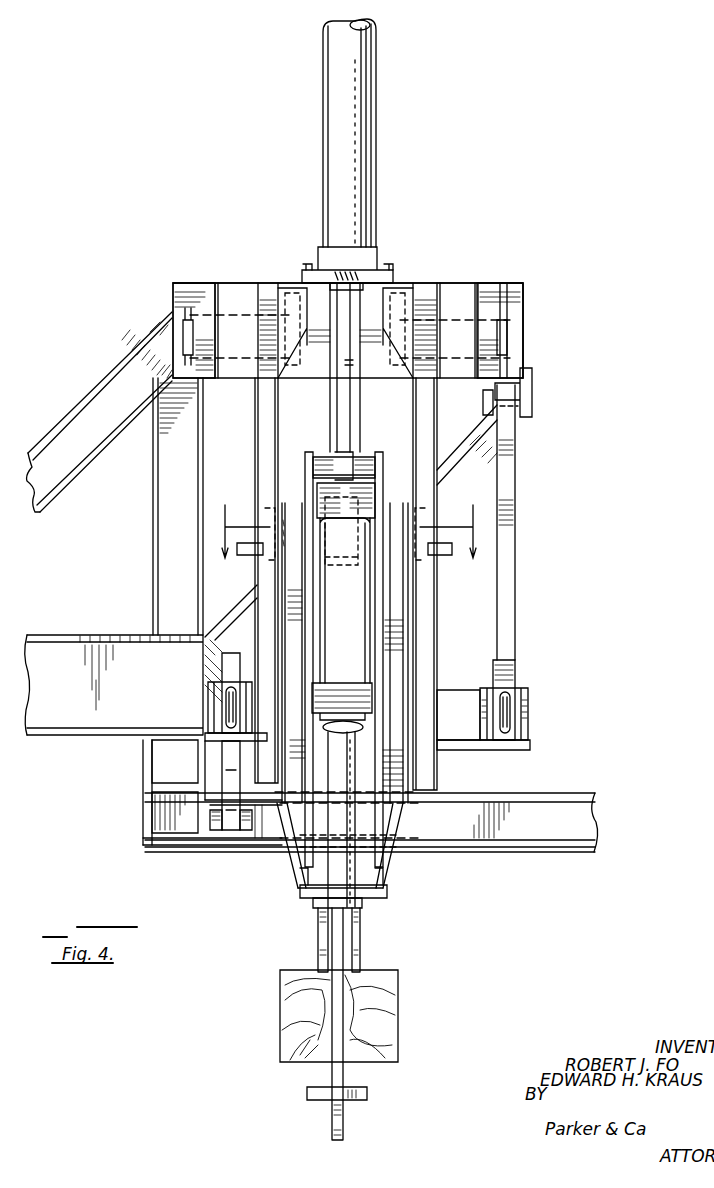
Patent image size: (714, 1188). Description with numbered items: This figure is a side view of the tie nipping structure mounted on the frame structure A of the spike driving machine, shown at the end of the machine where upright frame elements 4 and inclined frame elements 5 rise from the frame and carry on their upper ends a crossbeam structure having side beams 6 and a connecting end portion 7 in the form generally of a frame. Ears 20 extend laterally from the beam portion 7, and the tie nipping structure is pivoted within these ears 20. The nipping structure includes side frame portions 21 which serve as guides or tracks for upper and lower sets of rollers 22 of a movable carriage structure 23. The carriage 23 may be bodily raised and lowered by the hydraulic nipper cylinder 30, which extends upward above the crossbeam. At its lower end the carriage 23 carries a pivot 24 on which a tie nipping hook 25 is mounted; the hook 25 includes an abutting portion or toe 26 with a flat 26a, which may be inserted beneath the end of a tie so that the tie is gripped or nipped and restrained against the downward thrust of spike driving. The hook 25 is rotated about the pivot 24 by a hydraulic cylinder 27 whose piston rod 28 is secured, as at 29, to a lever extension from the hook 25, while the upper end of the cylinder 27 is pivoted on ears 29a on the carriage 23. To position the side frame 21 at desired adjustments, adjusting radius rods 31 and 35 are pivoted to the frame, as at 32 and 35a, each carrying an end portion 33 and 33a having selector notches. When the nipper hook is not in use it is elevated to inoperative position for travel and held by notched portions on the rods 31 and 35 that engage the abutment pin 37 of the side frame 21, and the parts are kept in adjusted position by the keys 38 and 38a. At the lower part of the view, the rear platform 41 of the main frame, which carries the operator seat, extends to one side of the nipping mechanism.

The hydraulic nipper cylinder 30 is at (372, 190).
The ears 20 is at (198, 298).
The side beams 6 is at (525, 340).
The pivot 35a is at (533, 405).
The connecting end portion 7 is at (322, 372).
The side frame portions 21 is at (263, 445).
The ears 29a is at (305, 468).
The inclined frame elements 5 is at (72, 425).
The upright frame elements 4 is at (170, 480).
The adjusting radius rod 35 is at (512, 528).
The rollers 22 is at (255, 548).
The frame structure A is at (65, 655).
The hydraulic cylinder 27 is at (355, 632).
The carriage structure 23 is at (404, 655).
The end portion 33 is at (225, 672).
The abutment pin 37 is at (210, 700).
The key 38 is at (227, 713).
The end portion 33a is at (510, 670).
The key 38a is at (507, 715).
The adjusting radius rod 31 is at (225, 780).
The pivot 32 is at (206, 820).
The piston rod 28 is at (330, 828).
The pivot 24 is at (380, 875).
The piston rod connection 29 is at (366, 898).
The rear platform 41 is at (590, 812).
The tie nipping hook 25 is at (330, 1063).
The flat 26a is at (370, 1088).
The toe 26 is at (345, 1118).